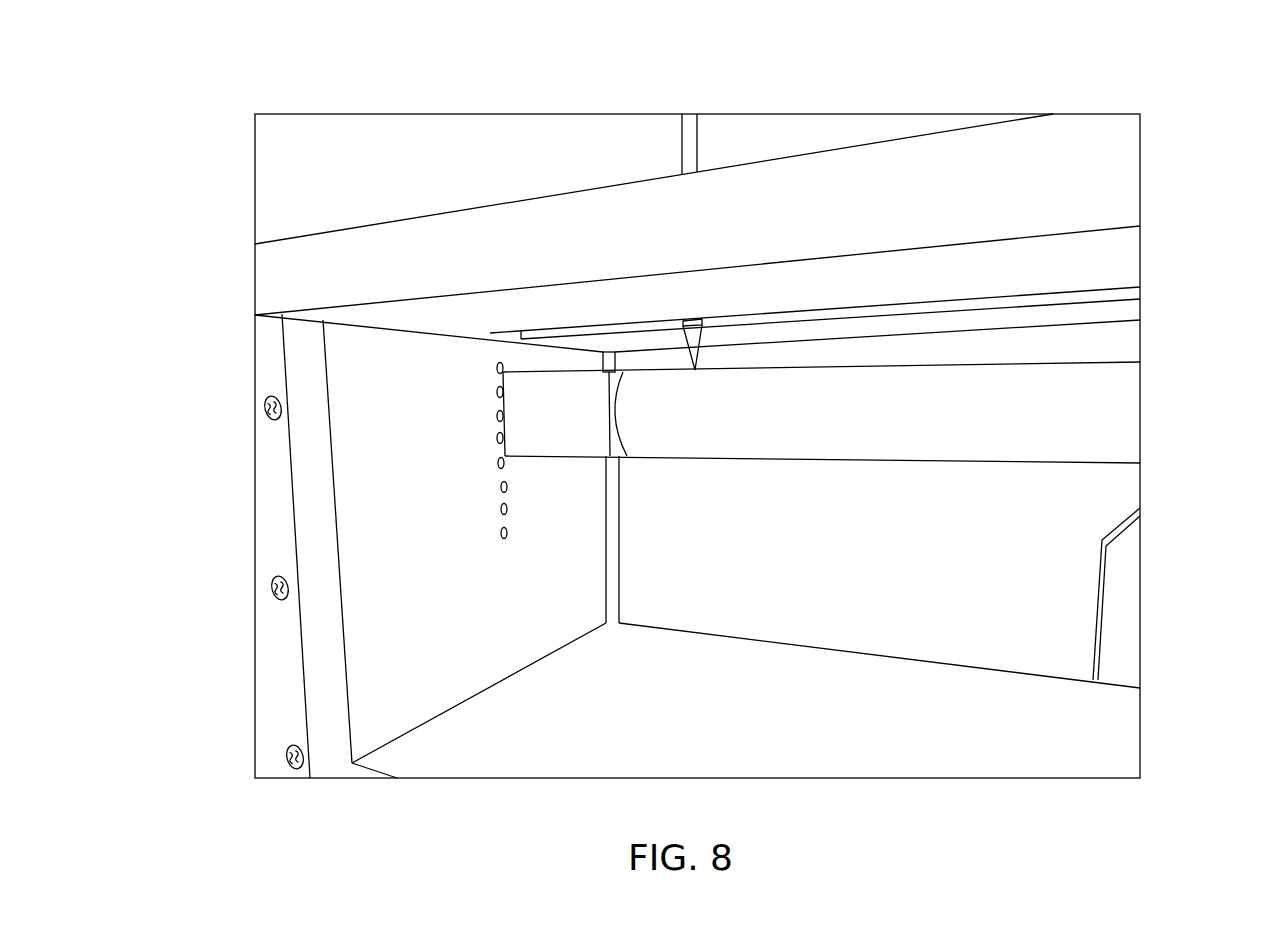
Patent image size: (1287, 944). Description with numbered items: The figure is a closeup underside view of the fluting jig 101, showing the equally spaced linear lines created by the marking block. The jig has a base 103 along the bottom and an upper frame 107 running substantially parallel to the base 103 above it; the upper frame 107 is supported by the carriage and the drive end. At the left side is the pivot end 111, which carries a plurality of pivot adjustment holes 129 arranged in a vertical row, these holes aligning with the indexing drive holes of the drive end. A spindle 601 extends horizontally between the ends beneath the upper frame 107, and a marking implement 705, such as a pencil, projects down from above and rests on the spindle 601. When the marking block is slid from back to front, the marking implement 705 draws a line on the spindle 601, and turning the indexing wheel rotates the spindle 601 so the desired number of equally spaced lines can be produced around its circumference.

The fluting jig 101 is at (250, 98).
The upper frame 107 is at (1096, 176).
The marking implement 705 is at (697, 139).
The spindle 601 is at (1083, 424).
The pivot adjustment holes 129 is at (497, 368).
The pivot end 111 is at (455, 752).
The base 103 is at (1028, 744).